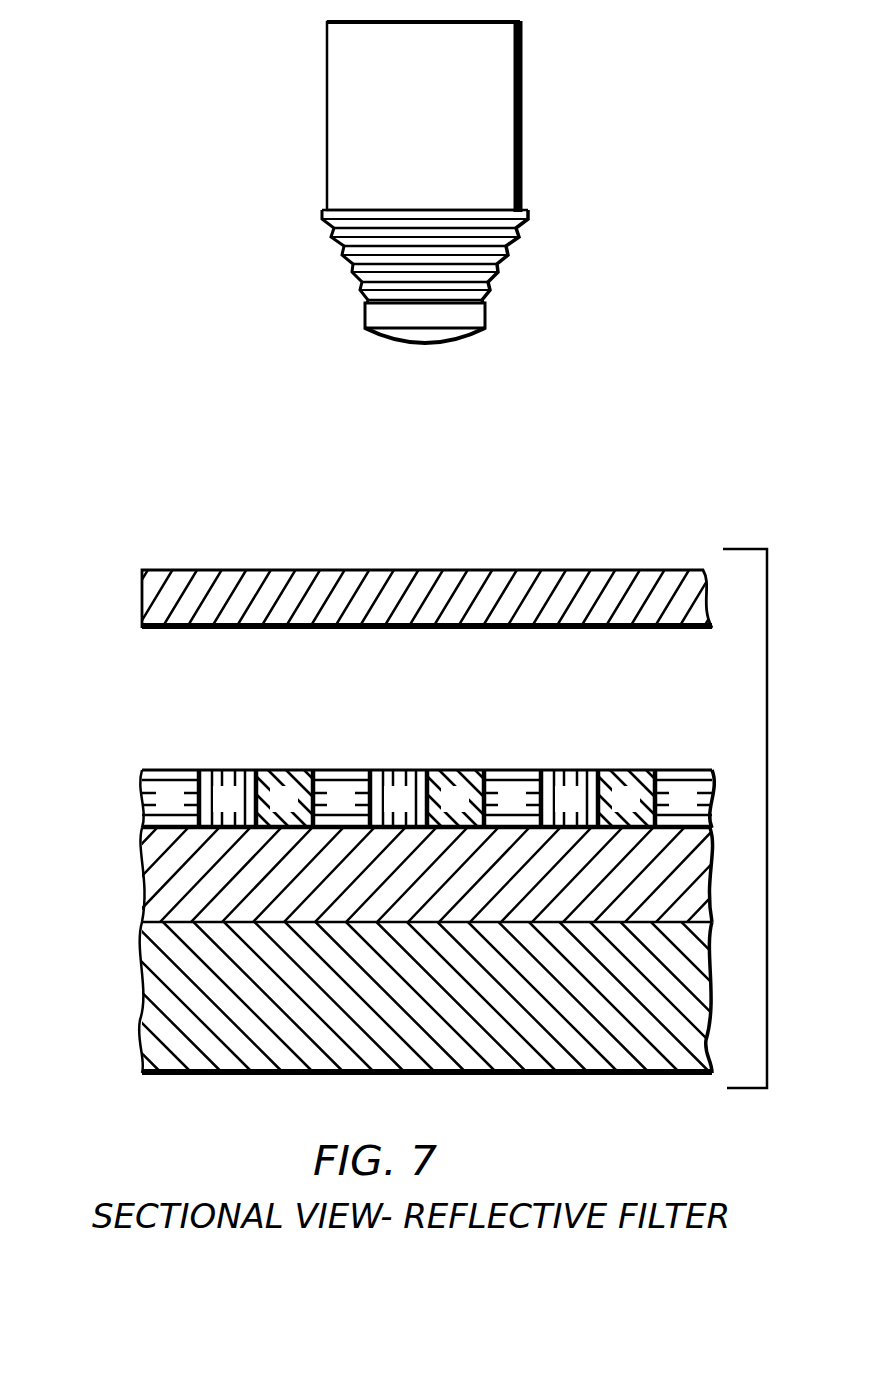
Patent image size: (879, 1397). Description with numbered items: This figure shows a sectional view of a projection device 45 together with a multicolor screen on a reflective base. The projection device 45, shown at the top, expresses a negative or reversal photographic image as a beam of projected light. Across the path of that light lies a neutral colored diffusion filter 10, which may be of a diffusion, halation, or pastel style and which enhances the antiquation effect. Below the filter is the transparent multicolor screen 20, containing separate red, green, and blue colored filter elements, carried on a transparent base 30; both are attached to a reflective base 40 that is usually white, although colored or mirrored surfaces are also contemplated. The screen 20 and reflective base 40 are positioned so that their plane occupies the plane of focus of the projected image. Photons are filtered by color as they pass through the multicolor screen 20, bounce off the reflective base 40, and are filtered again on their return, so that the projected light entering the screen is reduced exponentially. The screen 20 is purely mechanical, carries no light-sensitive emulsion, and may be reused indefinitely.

The projection device 45 is at (342, 125).
The diffusion filter 10 is at (143, 594).
The multicolor screen 20 is at (143, 793).
The transparent base 30 is at (153, 866).
The reflective base 40 is at (150, 973).